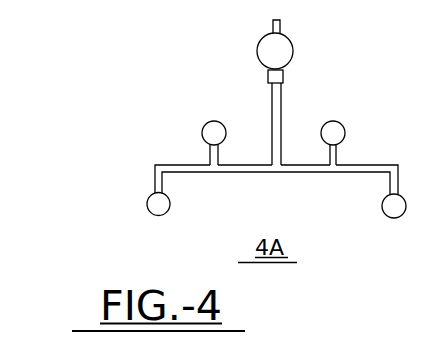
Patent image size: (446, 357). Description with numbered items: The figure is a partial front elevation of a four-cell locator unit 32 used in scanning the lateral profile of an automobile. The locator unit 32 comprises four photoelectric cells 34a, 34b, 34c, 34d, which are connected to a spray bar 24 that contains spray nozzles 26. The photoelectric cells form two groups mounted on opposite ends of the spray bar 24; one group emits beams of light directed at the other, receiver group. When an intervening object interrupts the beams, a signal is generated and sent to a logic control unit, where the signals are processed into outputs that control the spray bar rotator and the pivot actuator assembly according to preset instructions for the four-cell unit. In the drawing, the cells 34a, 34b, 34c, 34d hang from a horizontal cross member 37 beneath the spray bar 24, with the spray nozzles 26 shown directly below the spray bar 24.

The spray bar 24 is at (292, 54).
The spray nozzles 26 is at (283, 78).
The four-cell locator unit 32 is at (199, 98).
The photoelectric cell 34a is at (207, 130).
The photoelectric cell 34b is at (343, 128).
The photoelectric cell 34c is at (152, 213).
The photoelectric cell 34d is at (388, 215).
The cross bar 37 is at (258, 173).